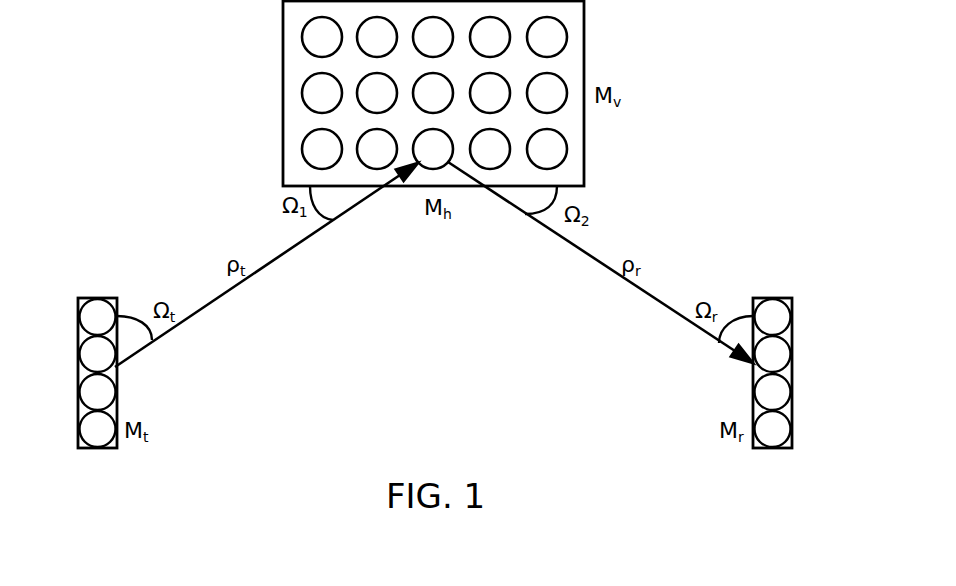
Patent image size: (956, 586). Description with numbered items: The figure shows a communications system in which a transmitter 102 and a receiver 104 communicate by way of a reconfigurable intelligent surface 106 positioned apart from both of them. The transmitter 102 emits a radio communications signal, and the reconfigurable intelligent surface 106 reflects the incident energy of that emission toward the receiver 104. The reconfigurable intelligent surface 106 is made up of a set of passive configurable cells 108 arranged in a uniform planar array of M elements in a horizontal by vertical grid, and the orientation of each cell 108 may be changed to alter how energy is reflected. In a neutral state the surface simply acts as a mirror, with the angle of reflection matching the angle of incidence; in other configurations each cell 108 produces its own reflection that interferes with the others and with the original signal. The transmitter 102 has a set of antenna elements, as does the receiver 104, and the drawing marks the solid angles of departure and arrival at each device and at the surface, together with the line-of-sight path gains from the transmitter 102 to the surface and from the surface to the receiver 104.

The transmitter 102 is at (97, 298).
The receiver 104 is at (774, 298).
The reconfigurable intelligent surface 106 is at (428, 93).
The passive configurable cell 108 is at (565, 42).